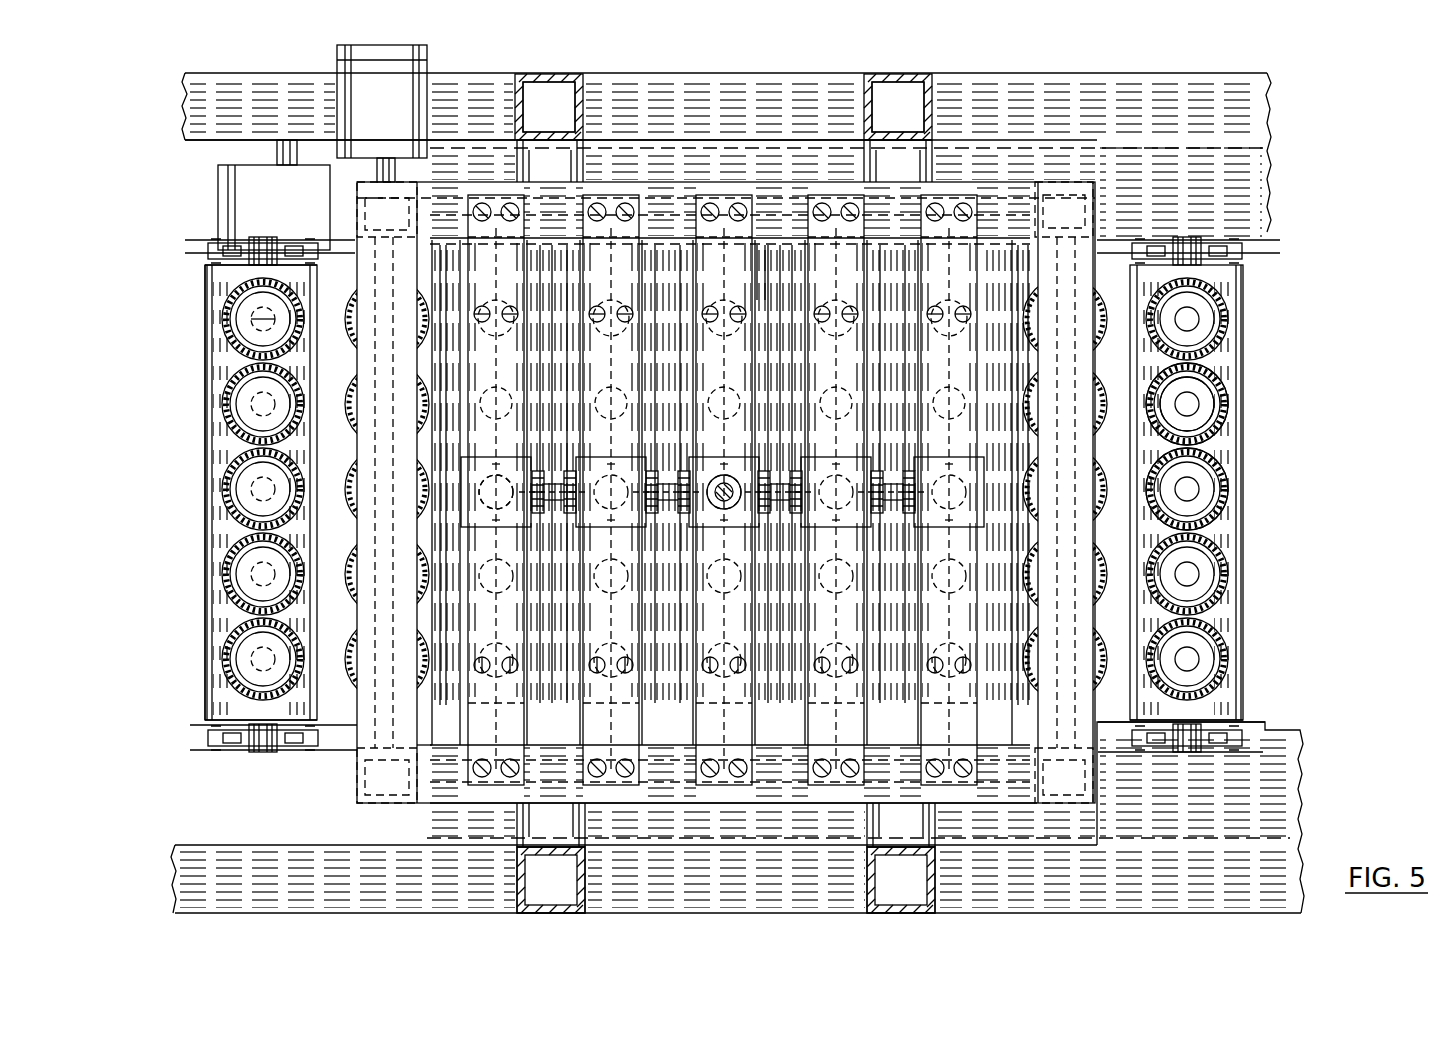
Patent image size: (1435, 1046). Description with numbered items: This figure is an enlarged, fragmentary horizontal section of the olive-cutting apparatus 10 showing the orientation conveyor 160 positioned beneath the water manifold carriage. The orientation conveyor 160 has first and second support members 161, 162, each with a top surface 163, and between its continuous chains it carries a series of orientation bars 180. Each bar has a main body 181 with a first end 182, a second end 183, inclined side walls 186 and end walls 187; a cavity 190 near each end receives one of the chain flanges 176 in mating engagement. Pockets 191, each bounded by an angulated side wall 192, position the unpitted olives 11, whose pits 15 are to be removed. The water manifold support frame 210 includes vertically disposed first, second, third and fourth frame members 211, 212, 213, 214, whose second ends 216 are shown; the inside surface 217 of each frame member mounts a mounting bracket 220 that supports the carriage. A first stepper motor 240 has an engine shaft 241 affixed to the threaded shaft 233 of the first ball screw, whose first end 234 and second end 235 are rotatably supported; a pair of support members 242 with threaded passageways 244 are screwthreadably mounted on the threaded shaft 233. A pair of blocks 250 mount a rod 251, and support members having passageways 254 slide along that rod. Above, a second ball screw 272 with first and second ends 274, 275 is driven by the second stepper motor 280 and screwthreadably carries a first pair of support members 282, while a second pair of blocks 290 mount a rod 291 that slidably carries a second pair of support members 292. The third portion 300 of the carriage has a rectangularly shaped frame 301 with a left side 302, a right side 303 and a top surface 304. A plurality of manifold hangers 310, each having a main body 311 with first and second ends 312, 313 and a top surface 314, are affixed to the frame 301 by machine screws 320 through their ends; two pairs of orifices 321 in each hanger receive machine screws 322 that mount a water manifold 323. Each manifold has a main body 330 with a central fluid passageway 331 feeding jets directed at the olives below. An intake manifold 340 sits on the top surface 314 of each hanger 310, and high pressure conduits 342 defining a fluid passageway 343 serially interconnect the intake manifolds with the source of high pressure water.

The apparatus for cutting a work object 10 is at (1022, 92).
The unpitted olives 11 is at (245, 330).
The pit 15 is at (240, 317).
The orientation conveyor 160 is at (195, 558).
The first support member 161 is at (735, 895).
The second support member 162 is at (697, 93).
The top surface 163 is at (1107, 95).
The flanges 176 is at (277, 258).
The orientation bars 180 is at (193, 437).
The main body 181 is at (207, 660).
The first end 182 is at (205, 284).
The second end 183 is at (205, 705).
The inclined side walls 186 is at (235, 262).
The end walls 187 is at (1160, 245).
The cavity or flange engagement position 190 is at (1243, 697).
The pockets 191 is at (1225, 480).
The angulated side wall 192 is at (1210, 394).
The water manifold support frame 210 is at (905, 50).
The first frame member 211 is at (550, 912).
The second frame member 212 is at (905, 912).
The third frame member 213 is at (937, 112).
The fourth frame member 214 is at (590, 113).
The second end 216 is at (585, 95).
The inside surface 217 is at (535, 143).
The mounting bracket 220 is at (565, 172).
The threaded shaft 233 is at (350, 545).
The first end 234 is at (372, 268).
The second end 235 is at (468, 740).
The first stepper motor 240 is at (397, 112).
The engine shaft 241 is at (400, 170).
The support members 242 is at (358, 358).
The threaded channel or passageway 244 is at (345, 437).
The blocks 250 is at (1100, 187).
The shaft or rod 251 is at (1080, 272).
The channel or passageway 254 is at (1125, 432).
The ball screw 272 is at (672, 188).
The first end 274 is at (455, 195).
The second end 275 is at (1033, 185).
The gear box 280 is at (287, 212).
The first pair of support members 282 is at (590, 188).
The second pair of blocks 290 is at (420, 805).
The shaft or rod 291 is at (730, 797).
The second pair of support members 292 is at (592, 800).
The third portion of the water manifold carriage 300 is at (1013, 186).
The rectangularly shaped frame 301 is at (770, 792).
The left side 302 is at (790, 185).
The right side 303 is at (745, 800).
The top surface 304 is at (730, 188).
The manifold hangers 310 is at (512, 700).
The main body 311 is at (700, 392).
The first end 312 is at (514, 233).
The second end 313 is at (530, 729).
The top surface 314 is at (614, 690).
The machine screws 320 is at (600, 204).
The orifices 321 is at (482, 323).
The machine screw 322 is at (480, 312).
The water manifold 323 is at (560, 378).
The main body 330 is at (770, 285).
The fluid passageway 331 is at (722, 480).
The intake manifold 340 is at (466, 490).
The high pressure conduits 342 is at (535, 482).
The fluid passageway 343 is at (612, 482).